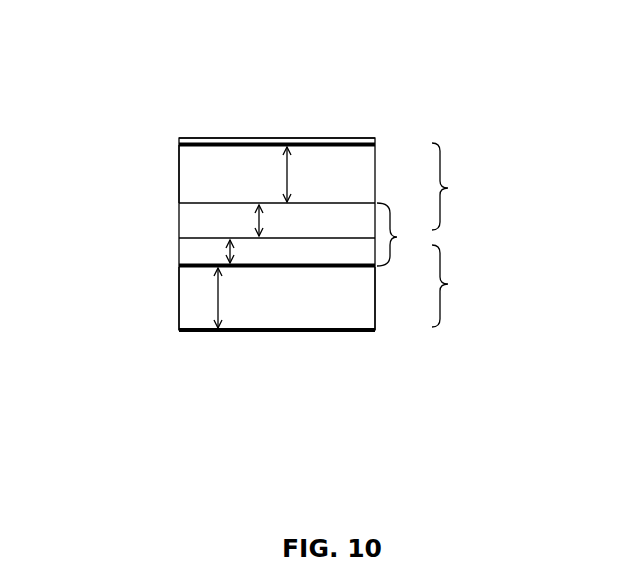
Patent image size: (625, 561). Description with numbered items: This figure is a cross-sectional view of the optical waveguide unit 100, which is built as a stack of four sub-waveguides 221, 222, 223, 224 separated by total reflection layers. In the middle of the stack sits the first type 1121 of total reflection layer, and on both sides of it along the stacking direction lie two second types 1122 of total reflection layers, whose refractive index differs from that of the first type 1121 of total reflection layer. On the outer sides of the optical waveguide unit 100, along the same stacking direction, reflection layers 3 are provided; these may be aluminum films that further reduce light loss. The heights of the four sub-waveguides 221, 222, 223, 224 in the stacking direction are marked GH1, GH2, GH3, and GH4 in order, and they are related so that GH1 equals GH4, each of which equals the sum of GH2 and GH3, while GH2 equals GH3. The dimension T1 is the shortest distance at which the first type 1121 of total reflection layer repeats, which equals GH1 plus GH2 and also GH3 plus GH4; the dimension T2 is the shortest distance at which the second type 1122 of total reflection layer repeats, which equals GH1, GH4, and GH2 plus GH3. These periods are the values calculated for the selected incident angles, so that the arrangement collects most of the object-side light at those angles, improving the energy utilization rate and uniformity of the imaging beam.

The optical waveguide unit 100 is at (277, 166).
The reflection layer 3 is at (183, 138).
The sub-waveguide 221 is at (360, 172).
The sub-waveguide 222 is at (328, 225).
The sub-waveguide 223 is at (300, 305).
The sub-waveguide 224 is at (350, 255).
The first type of total reflection layer 1121 is at (184, 231).
The second type of total reflection layer 1122 is at (186, 192).
The height of the first sub-waveguide GH1 is at (301, 174).
The height of the second sub-waveguide GH2 is at (273, 220).
The height of the third sub-waveguide GH3 is at (244, 251).
The height of the fourth sub-waveguide GH4 is at (236, 298).
The period of the first type of total reflection layer T1 is at (456, 235).
The period of the second type of total reflection layer T2 is at (402, 234).